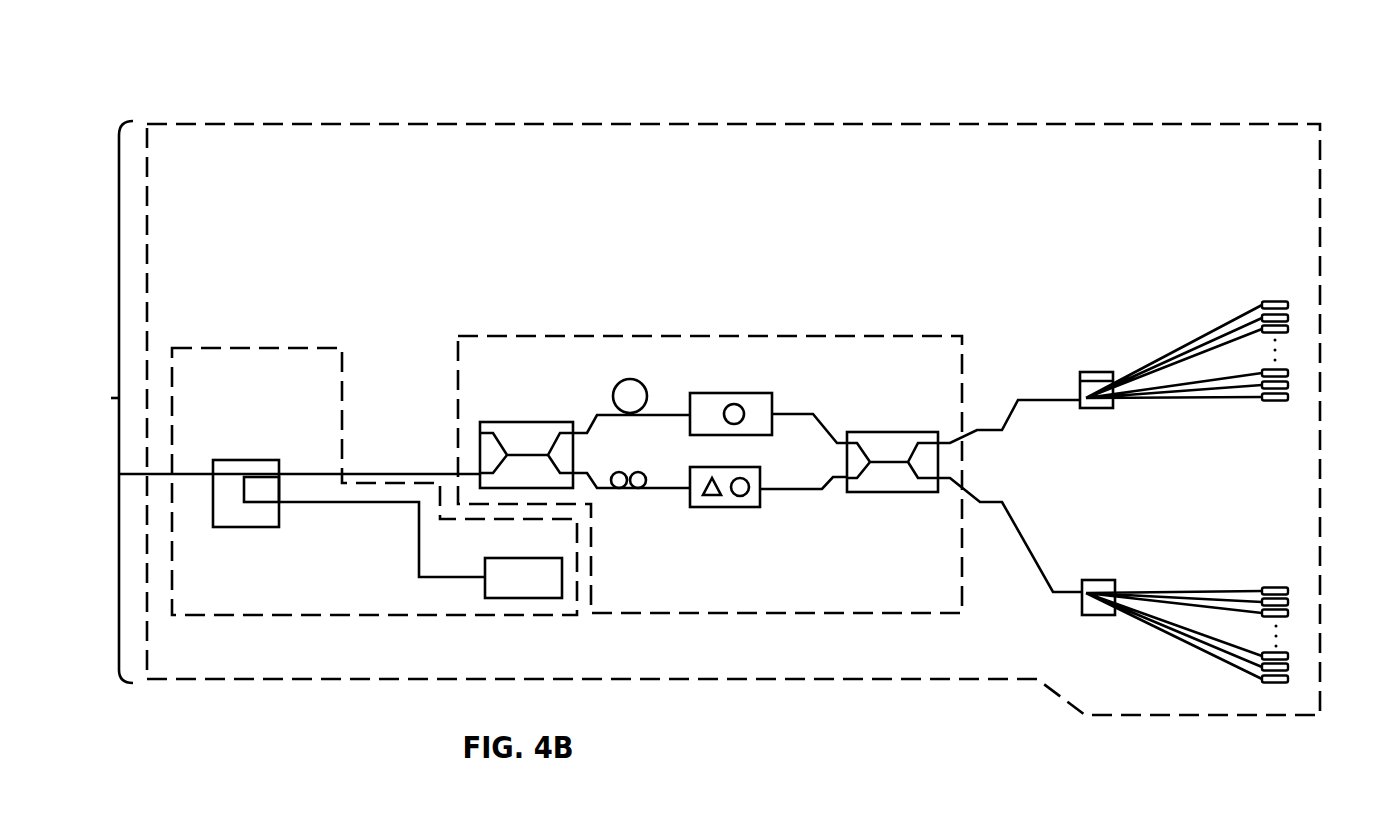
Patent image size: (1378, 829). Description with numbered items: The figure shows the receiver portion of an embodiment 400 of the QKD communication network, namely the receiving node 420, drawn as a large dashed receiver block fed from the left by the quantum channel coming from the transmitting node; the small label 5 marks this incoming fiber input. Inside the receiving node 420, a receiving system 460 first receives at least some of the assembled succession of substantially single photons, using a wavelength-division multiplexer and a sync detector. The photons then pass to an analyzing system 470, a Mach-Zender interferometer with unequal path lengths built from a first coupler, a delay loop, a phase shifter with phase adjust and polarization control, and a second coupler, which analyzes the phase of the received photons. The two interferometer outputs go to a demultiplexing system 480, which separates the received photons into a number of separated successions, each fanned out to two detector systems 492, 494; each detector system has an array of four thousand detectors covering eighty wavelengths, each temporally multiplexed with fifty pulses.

The communication network embodiment 400 is at (507, 106).
The input optical fiber from FIG. 4A 5 is at (295, 402).
The receiving node 420 is at (968, 122).
The receiving system 460 is at (352, 618).
The analyzing system 470 is at (661, 331).
The demultiplexing system 480 is at (1092, 411).
The detector system 492 is at (1298, 344).
The detector system 494 is at (1293, 632).